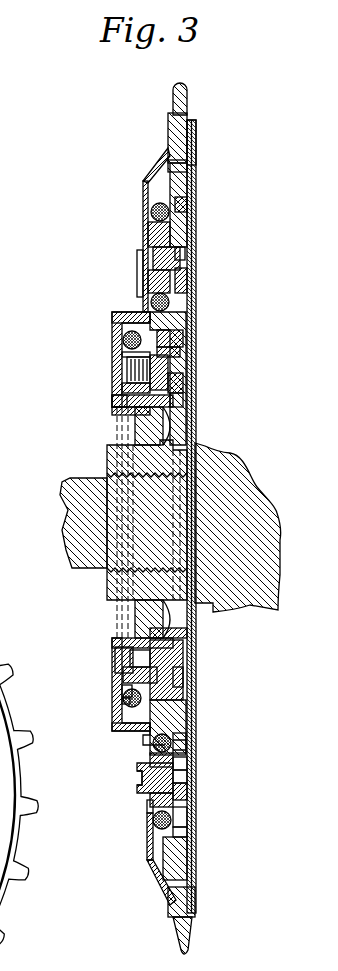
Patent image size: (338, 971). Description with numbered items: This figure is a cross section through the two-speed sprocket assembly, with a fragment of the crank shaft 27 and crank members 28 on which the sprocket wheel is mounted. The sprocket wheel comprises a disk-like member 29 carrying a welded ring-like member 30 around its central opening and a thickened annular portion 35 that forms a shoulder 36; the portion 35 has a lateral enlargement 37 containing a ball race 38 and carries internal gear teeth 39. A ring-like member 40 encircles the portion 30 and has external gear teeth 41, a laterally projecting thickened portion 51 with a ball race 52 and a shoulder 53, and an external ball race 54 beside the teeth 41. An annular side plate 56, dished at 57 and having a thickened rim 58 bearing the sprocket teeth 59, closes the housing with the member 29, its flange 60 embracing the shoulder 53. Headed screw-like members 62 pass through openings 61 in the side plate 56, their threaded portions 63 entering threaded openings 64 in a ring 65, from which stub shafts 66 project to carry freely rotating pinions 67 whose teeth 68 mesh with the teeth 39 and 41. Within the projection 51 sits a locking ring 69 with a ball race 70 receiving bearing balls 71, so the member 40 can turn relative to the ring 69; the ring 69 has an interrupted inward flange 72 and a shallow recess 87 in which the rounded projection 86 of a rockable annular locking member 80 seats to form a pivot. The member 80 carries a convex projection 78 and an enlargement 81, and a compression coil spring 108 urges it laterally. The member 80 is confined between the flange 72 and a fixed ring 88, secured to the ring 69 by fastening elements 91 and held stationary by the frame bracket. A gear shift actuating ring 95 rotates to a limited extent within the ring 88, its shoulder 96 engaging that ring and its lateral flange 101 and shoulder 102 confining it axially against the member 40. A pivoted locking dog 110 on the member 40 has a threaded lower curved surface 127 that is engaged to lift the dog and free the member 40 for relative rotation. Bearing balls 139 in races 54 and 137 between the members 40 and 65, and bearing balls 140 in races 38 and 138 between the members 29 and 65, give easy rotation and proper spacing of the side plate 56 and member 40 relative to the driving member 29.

The crank shaft 27 is at (90, 533).
The crank members 28 is at (262, 596).
The disk-like member 29 is at (198, 861).
The ring-like member 30 is at (148, 587).
The thickened annular portion 35 is at (198, 160).
The annular ledge or shoulder 36 is at (188, 150).
The lateral annular enlargement 37 is at (152, 209).
The ball race 38 is at (185, 186).
The internal gear teeth 39 is at (189, 822).
The ring-like member 40 is at (182, 310).
The gear teeth 41 is at (183, 743).
The laterally projecting annular thickened portion 51 is at (115, 729).
The ball race 52 is at (112, 325).
The annular ledge or shoulder 53 is at (145, 731).
The external ball race 54 is at (152, 306).
The annular side plate 56 is at (143, 194).
The dished portion 57 is at (152, 168).
The thickened rim portion 58 is at (168, 131).
The sprocket teeth 59 is at (182, 98).
The laterally projecting annular flange 60 is at (122, 313).
The openings 61 is at (147, 806).
The headed screw-like members 62 is at (137, 792).
The threaded portions 63 is at (189, 763).
The threaded openings 64 is at (189, 793).
The ring 65 is at (170, 235).
The stub shafts 66 is at (185, 253).
The pinions 67 is at (186, 280).
The teeth 68 is at (189, 778).
The locking ring 69 is at (176, 334).
The ball race 70 is at (122, 371).
The bearing balls 71 is at (122, 356).
The inwardly directed flange 72 is at (152, 652).
The convex projection 78 is at (120, 387).
The rockable annular locking member 80 is at (120, 656).
The enlargement 81 is at (183, 381).
The convexly rounded projection 86 is at (125, 674).
The small shallow concave recess 87 is at (140, 658).
The fixed ring 88 is at (127, 341).
The screw-threaded headed fastening elements 91 is at (128, 697).
The ring-like gear shift actuating member 95 is at (118, 411).
The shoulder 96 is at (112, 398).
The laterally projecting flange 101 is at (183, 411).
The annular shoulder 102 is at (176, 402).
The compression coil spring 108 is at (152, 370).
The pivoted locking dog 110 is at (176, 350).
The lower curved surface 127 is at (168, 357).
The ball race 137 is at (148, 277).
The ball race 138 is at (148, 236).
The bearing balls 139 is at (137, 290).
The bearing balls 140 is at (186, 204).